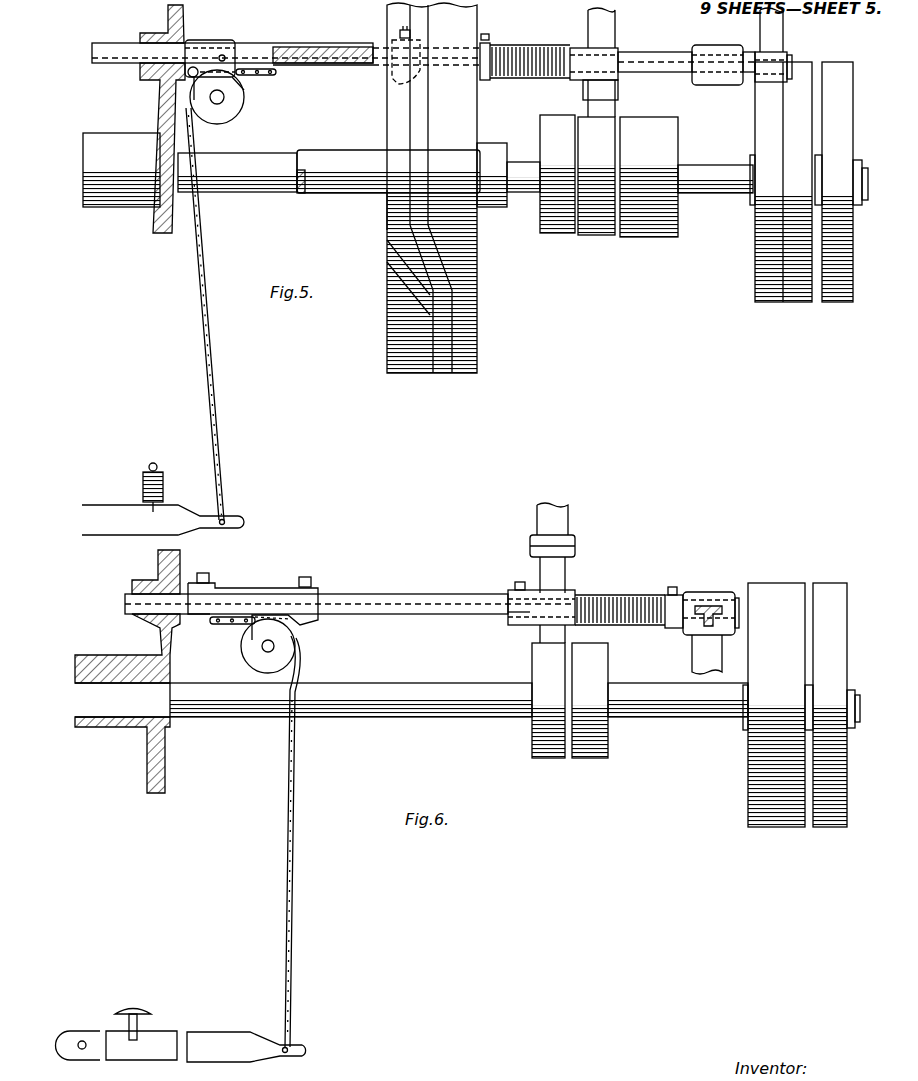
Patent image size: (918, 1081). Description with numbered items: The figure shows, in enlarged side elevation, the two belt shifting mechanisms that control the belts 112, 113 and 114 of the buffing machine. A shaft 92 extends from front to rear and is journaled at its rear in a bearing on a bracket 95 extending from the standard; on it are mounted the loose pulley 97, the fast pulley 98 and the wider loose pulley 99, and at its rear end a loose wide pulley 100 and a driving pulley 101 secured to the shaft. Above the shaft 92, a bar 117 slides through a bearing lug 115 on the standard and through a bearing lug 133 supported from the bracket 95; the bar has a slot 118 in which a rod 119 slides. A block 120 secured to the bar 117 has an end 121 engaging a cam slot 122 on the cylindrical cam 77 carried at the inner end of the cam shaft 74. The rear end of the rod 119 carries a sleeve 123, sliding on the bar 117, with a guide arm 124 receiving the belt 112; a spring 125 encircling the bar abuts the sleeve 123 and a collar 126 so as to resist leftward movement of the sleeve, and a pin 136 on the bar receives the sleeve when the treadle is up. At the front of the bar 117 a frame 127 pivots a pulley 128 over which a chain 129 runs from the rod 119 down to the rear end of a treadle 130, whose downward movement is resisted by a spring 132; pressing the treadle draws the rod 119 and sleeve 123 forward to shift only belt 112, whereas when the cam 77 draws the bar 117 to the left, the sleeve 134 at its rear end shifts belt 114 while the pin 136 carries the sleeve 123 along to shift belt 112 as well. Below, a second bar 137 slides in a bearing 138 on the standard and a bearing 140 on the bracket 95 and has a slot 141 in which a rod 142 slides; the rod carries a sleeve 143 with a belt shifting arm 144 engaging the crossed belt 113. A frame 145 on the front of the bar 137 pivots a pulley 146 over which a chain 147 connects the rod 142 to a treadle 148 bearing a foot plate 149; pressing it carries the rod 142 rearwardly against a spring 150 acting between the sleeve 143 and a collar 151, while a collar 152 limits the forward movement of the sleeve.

In FIG. 5, the shaft 74 is at (335, 152).
In FIG. 5, the cylindrical cam 77 is at (432, 188).
In FIG. 5, the shaft 92 is at (268, 190).
In FIG. 6, the shaft 92 is at (386, 708).
In FIG. 6, the bracket 95 is at (692, 658).
In FIG. 5, the pulley 97 is at (558, 233).
In FIG. 6, the pulley 97 is at (548, 700).
In FIG. 5, the pulley 98 is at (580, 236).
In FIG. 6, the pulley 98 is at (590, 700).
In FIG. 5, the pulley 99 is at (650, 237).
In FIG. 5, the wide pulley 100 is at (795, 300).
In FIG. 6, the wide pulley 100 is at (778, 826).
In FIG. 5, the driving pulley 101 is at (836, 303).
In FIG. 6, the driving pulley 101 is at (832, 828).
In FIG. 5, the belt 112 is at (604, 62).
In FIG. 6, the belt 113 is at (568, 510).
In FIG. 5, the belt 114 is at (770, 110).
In FIG. 5, the bearing lug 115 is at (158, 33).
In FIG. 5, the bar 117 is at (382, 52).
In FIG. 5, the slot 118 is at (283, 47).
In FIG. 5, the rod 119 is at (325, 66).
In FIG. 5, the block 120 is at (400, 36).
In FIG. 5, the end of block 121 is at (398, 84).
In FIG. 5, the cam slot 122 is at (388, 205).
In FIG. 5, the sleeve 123 is at (615, 50).
In FIG. 5, the guide arm 124 is at (618, 92).
In FIG. 5, the spring 125 is at (532, 46).
In FIG. 5, the collar 126 is at (485, 42).
In FIG. 5, the frame 127 is at (203, 47).
In FIG. 5, the pulley 128 is at (232, 115).
In FIG. 5, the chain 129 is at (207, 220).
In FIG. 5, the treadle 130 is at (178, 508).
In FIG. 5, the spring 132 is at (140, 476).
In FIG. 5, the bearing lug 133 is at (712, 48).
In FIG. 5, the sleeve 134 is at (776, 62).
In FIG. 5, the pin 136 is at (635, 52).
In FIG. 6, the bar 137 is at (400, 596).
In FIG. 6, the bearing 138 is at (148, 582).
In FIG. 6, the bearing 140 is at (718, 586).
In FIG. 6, the slot 141 is at (470, 603).
In FIG. 6, the rod 142 is at (208, 620).
In FIG. 6, the sleeve 143 is at (570, 593).
In FIG. 6, the belt shifting arm 144 is at (568, 572).
In FIG. 6, the frame 145 is at (318, 586).
In FIG. 6, the pulley 146 is at (296, 648).
In FIG. 6, the chain 147 is at (250, 628).
In FIG. 6, the treadle 148 is at (220, 1034).
In FIG. 6, the foot plate 149 is at (143, 1004).
In FIG. 6, the spring 150 is at (638, 596).
In FIG. 6, the collar 151 is at (676, 600).
In FIG. 6, the collar 152 is at (518, 624).